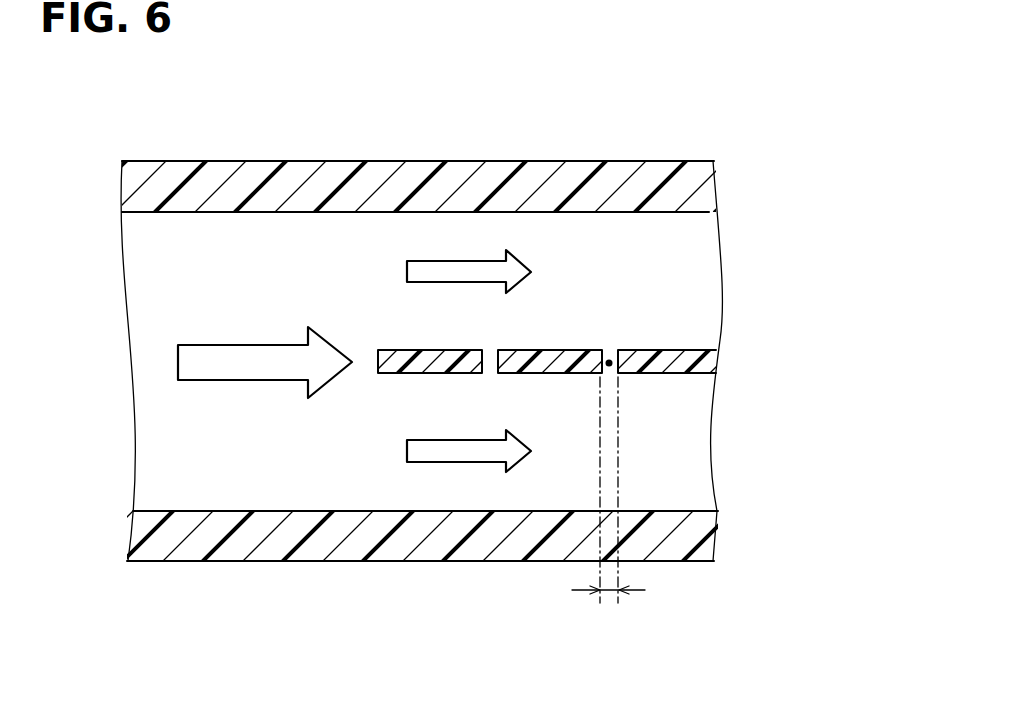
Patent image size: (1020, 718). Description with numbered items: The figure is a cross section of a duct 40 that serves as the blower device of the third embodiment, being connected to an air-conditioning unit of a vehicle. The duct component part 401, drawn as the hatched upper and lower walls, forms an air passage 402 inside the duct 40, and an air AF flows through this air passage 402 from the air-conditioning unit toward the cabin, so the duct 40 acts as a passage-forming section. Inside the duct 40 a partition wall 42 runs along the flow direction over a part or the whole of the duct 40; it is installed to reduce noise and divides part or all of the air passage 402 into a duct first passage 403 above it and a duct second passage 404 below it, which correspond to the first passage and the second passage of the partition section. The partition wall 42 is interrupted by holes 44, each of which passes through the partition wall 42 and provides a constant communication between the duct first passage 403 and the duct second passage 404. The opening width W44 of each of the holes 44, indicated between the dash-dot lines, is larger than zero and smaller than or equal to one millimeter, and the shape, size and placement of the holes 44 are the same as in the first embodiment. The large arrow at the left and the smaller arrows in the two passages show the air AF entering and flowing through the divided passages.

The duct 40 is at (117, 121).
The duct component part 401 is at (262, 160).
The air passage 402 is at (307, 282).
The duct first passage 403 is at (590, 249).
The duct second passage 404 is at (548, 465).
The partition wall 42 is at (695, 350).
The holes 44 is at (609, 366).
The opening width W44 is at (612, 606).
The air AF is at (448, 259).